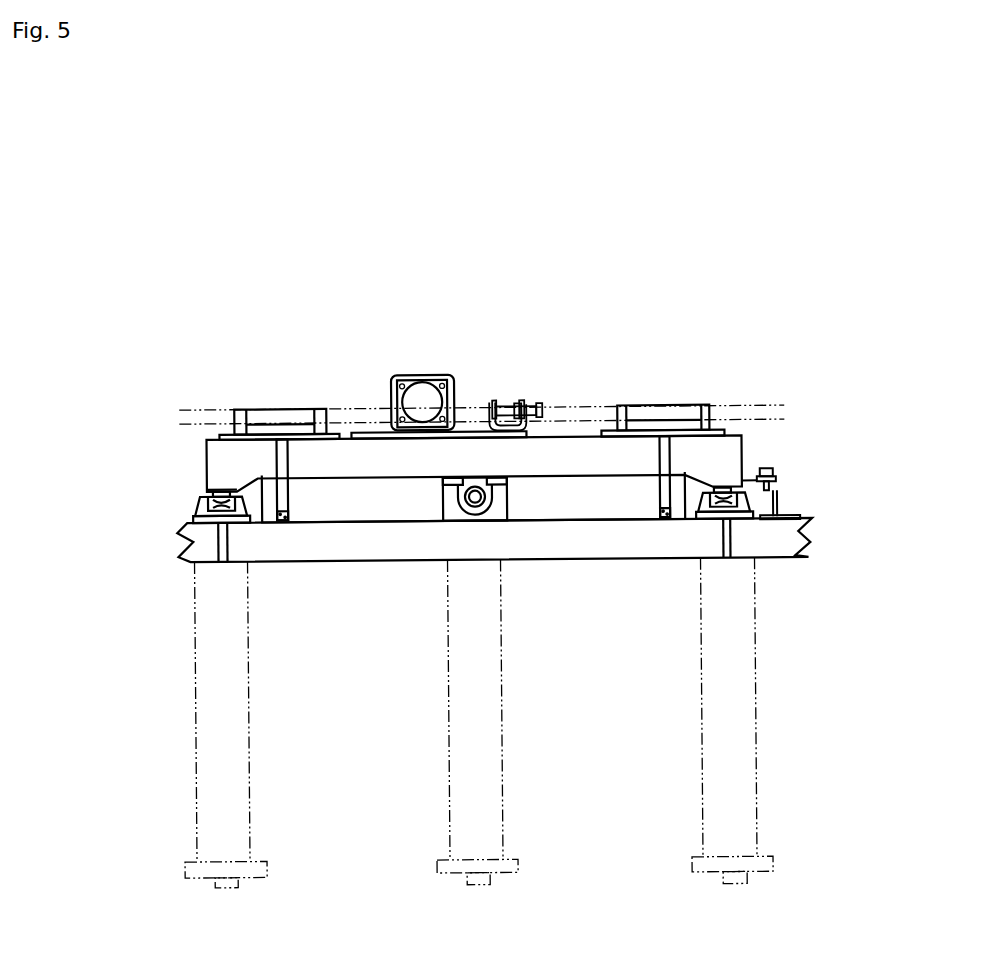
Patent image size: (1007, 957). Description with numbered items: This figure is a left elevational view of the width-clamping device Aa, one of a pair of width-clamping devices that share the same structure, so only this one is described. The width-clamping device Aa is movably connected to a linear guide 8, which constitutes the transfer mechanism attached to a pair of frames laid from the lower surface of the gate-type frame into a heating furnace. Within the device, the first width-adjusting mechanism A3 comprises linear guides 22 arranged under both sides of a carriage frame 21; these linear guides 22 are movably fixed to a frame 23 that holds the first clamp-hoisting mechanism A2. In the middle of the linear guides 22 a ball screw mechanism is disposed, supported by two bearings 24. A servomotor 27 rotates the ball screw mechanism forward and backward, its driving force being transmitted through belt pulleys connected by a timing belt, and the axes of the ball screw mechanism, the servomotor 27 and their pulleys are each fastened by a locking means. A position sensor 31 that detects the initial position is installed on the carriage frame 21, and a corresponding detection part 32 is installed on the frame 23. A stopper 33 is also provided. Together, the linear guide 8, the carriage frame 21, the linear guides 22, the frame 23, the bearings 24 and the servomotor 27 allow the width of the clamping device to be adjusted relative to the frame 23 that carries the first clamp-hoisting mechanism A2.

The width-clamping device Aa is at (306, 182).
The first width-adjusting mechanism A3 is at (272, 347).
The first clamp-hoisting mechanism A2 is at (696, 724).
The linear guide 8 is at (263, 405).
The carriage frame 21 is at (532, 455).
The linear guides 22 is at (193, 501).
The frame 23 is at (278, 543).
The bearings 24 is at (494, 503).
The servomotor 27 is at (425, 404).
The position sensor 31 is at (766, 472).
The detection part 32 is at (778, 512).
The stopper 33 is at (284, 499).